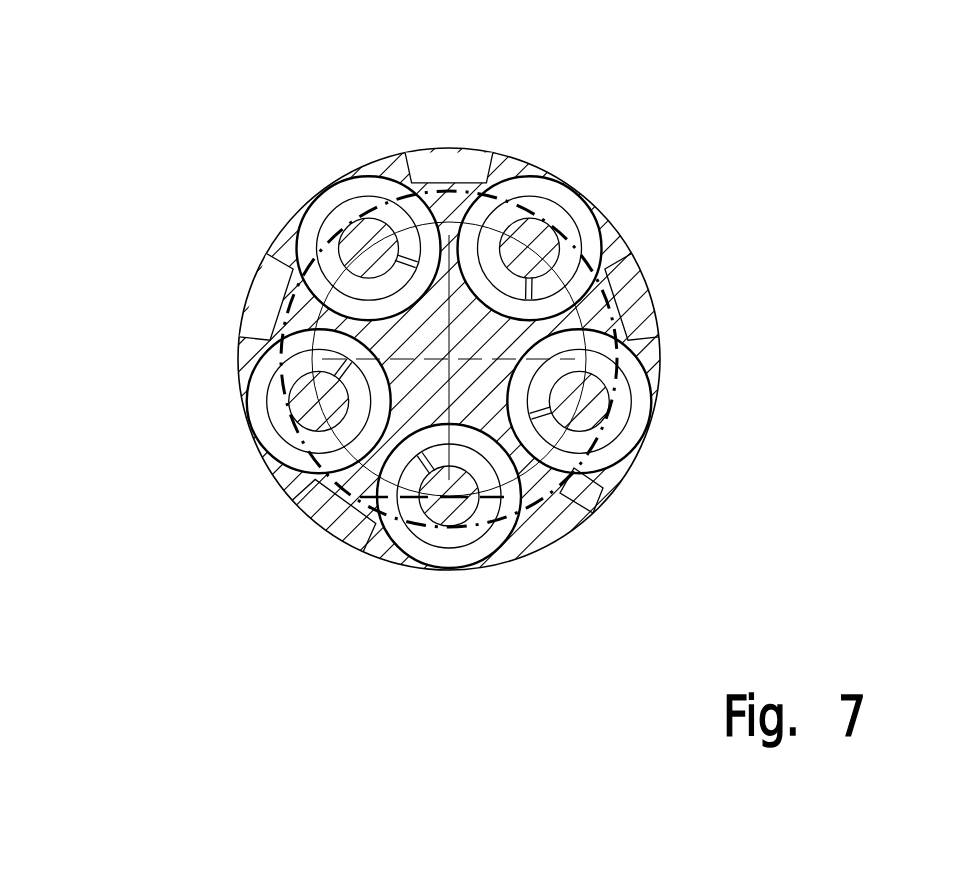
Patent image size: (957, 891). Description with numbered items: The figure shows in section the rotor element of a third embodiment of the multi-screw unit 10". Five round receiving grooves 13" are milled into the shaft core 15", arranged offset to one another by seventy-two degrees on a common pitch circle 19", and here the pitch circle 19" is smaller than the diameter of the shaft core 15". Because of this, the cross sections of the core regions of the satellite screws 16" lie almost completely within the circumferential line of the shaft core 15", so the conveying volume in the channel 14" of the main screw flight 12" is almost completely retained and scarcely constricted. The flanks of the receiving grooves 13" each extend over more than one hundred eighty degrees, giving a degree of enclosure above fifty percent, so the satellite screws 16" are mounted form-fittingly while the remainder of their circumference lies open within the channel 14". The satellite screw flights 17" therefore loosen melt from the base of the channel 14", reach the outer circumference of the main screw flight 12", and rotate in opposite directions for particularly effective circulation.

The multi-screw unit 10 is at (478, 357).
The main screw flight 12 is at (261, 300).
The receiving groove 13 is at (438, 240).
The channel 14 is at (548, 508).
The shaft core 15 is at (467, 455).
The satellite screw 16 is at (587, 407).
The satellite screw flight 17 is at (625, 375).
The pitch circle 19 is at (370, 233).